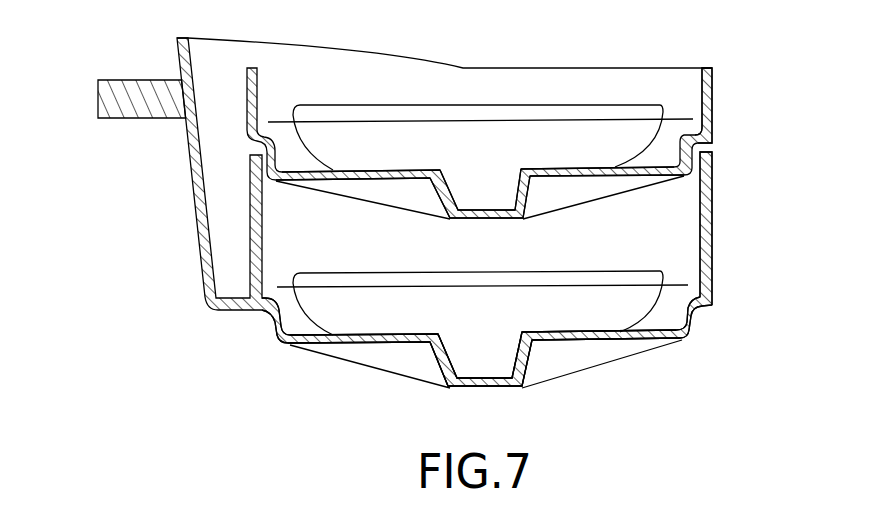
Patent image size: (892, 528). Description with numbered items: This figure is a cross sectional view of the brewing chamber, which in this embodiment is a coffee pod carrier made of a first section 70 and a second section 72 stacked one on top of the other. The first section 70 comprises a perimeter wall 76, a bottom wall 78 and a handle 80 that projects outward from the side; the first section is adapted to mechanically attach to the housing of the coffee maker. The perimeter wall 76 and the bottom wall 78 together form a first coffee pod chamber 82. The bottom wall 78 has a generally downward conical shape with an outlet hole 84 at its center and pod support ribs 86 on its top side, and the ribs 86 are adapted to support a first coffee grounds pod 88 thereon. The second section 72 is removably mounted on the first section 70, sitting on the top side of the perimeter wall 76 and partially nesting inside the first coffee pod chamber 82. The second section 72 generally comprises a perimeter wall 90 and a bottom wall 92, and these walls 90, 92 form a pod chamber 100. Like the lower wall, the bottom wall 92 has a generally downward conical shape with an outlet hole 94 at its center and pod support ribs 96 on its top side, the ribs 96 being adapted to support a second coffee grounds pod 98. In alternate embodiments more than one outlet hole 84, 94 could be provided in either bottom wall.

The first section 70 is at (192, 170).
The second section 72 is at (712, 70).
The perimeter wall 76 is at (713, 195).
The bottom wall 78 is at (591, 348).
The handle 80 is at (127, 80).
The first coffee pod chamber 82 is at (640, 246).
The outlet hole 84 is at (487, 386).
The pod support ribs 86 is at (395, 345).
The first coffee grounds pod 88 is at (647, 300).
The perimeter wall 90 is at (715, 96).
The bottom wall 92 is at (590, 168).
The outlet hole 94 is at (477, 217).
The pod support ribs 96 is at (417, 172).
The second coffee grounds pod 98 is at (493, 122).
The pod chamber 100 is at (662, 80).